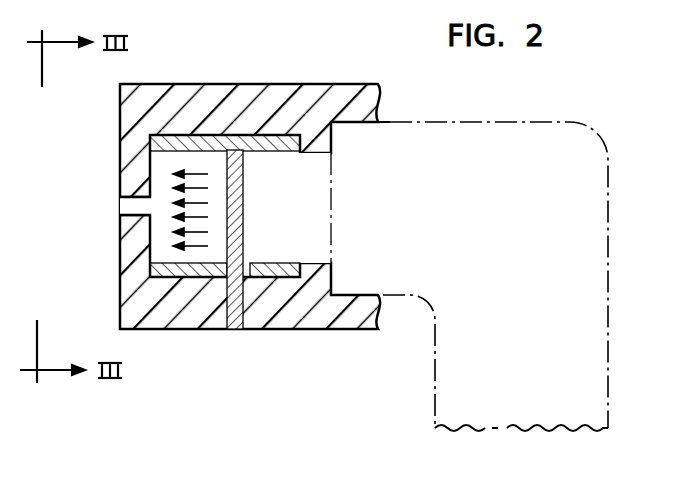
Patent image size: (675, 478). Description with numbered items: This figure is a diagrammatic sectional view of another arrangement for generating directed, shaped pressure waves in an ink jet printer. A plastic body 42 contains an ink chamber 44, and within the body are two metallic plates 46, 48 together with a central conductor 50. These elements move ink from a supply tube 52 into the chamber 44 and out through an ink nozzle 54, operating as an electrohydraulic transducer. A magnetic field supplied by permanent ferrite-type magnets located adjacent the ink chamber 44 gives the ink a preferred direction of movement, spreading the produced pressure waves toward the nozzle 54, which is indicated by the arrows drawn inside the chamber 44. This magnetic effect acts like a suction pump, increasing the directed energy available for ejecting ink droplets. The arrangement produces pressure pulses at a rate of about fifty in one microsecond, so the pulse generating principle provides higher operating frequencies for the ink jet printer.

The plastic body 42 is at (310, 318).
The ink chamber 44 is at (302, 223).
The metallic plate 46 is at (241, 147).
The metallic plate 48 is at (183, 267).
The central conductor 50 is at (230, 304).
The supply tube 52 is at (434, 397).
The ink nozzle 54 is at (133, 207).